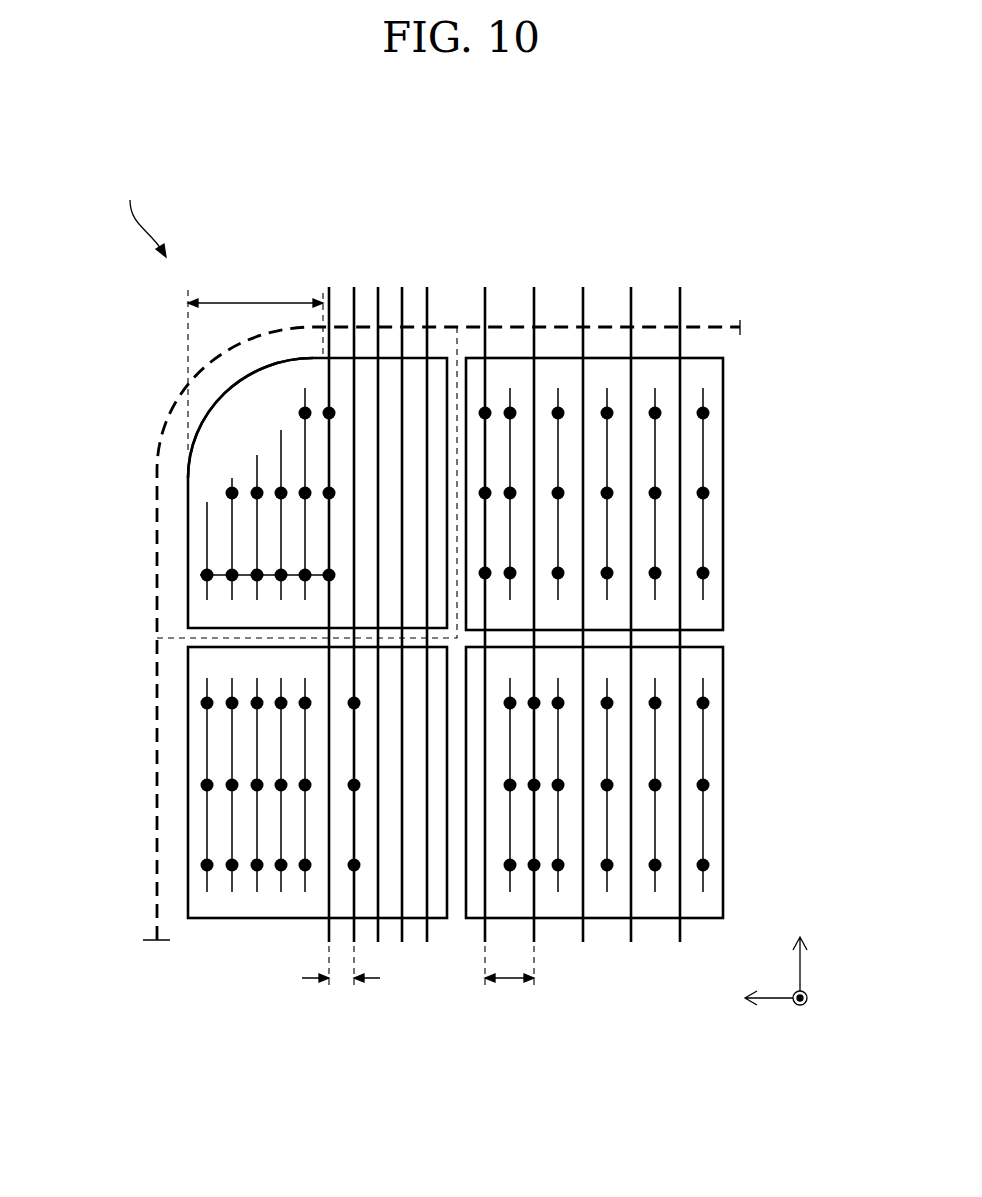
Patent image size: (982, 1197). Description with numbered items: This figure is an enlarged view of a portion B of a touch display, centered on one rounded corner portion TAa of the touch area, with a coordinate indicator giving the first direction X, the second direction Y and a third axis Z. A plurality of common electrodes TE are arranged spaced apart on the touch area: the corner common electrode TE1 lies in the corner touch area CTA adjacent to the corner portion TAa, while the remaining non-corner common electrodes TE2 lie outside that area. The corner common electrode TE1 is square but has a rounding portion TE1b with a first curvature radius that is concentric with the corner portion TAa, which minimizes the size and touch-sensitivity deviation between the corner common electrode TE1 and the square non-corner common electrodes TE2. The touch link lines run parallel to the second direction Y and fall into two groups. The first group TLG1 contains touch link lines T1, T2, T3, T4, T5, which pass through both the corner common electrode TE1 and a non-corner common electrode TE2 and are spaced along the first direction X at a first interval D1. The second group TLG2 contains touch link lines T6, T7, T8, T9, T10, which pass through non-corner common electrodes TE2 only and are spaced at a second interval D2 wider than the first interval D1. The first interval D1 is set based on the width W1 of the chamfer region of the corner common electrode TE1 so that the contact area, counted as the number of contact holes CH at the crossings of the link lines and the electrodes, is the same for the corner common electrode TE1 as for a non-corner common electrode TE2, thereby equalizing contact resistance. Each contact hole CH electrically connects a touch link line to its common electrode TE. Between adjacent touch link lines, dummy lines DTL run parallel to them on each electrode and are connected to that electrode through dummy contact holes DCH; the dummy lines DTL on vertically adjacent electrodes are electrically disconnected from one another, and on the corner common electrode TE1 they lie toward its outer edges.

The portion B is at (144, 216).
The first group TLG1 is at (381, 566).
The second group TLG2 is at (587, 566).
The touch link line T1 is at (330, 312).
The touch link line T2 is at (355, 312).
The touch link line T3 is at (379, 312).
The touch link line T4 is at (403, 312).
The touch link line T5 is at (433, 587).
The touch link line T6 is at (486, 312).
The touch link line T7 is at (535, 312).
The touch link line T8 is at (584, 312).
The touch link line T9 is at (632, 312).
The touch link line T10 is at (671, 587).
The corner touch area CTA is at (458, 345).
The width W1 is at (255, 364).
The corner portion TAa is at (180, 400).
The rounding portion TE1b is at (200, 432).
The dummy line DTL is at (257, 478).
The dummy contact hole DCH is at (232, 493).
The contact hole CH is at (329, 573).
The corner common electrode TE1 is at (188, 575).
The common electrode TE is at (431, 638).
The non-corner common electrode TE2 is at (80, 572).
The first interval D1 is at (341, 980).
The second interval D2 is at (509, 980).
The first direction X is at (757, 999).
The second direction Y is at (800, 952).
The Z axis Z is at (812, 999).